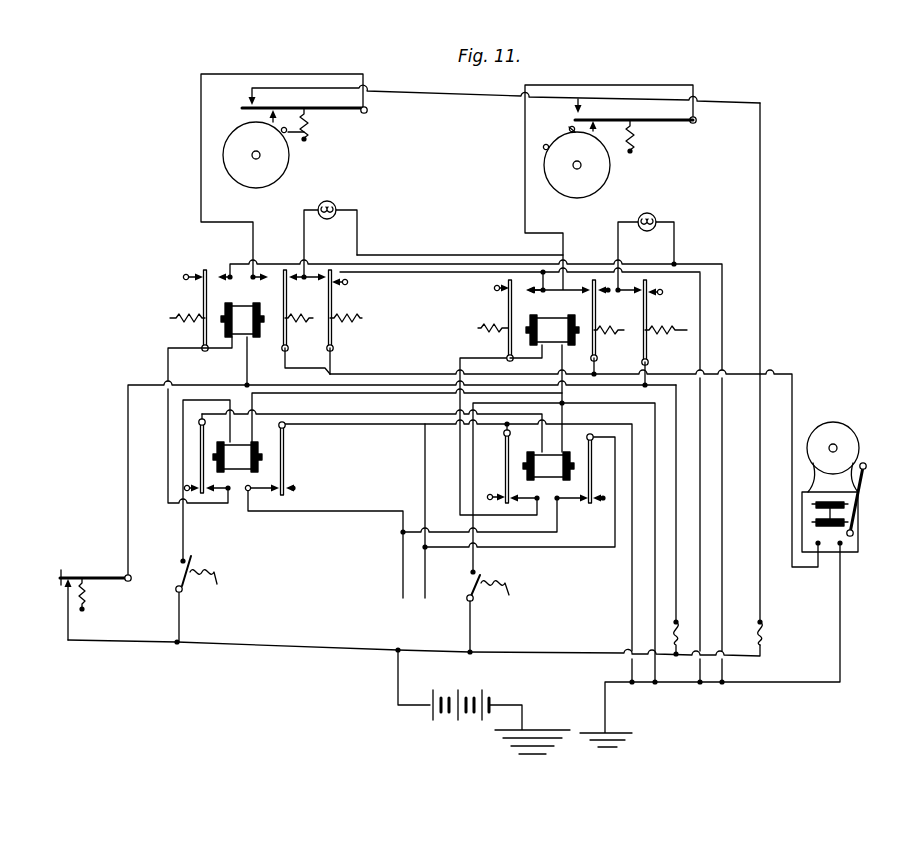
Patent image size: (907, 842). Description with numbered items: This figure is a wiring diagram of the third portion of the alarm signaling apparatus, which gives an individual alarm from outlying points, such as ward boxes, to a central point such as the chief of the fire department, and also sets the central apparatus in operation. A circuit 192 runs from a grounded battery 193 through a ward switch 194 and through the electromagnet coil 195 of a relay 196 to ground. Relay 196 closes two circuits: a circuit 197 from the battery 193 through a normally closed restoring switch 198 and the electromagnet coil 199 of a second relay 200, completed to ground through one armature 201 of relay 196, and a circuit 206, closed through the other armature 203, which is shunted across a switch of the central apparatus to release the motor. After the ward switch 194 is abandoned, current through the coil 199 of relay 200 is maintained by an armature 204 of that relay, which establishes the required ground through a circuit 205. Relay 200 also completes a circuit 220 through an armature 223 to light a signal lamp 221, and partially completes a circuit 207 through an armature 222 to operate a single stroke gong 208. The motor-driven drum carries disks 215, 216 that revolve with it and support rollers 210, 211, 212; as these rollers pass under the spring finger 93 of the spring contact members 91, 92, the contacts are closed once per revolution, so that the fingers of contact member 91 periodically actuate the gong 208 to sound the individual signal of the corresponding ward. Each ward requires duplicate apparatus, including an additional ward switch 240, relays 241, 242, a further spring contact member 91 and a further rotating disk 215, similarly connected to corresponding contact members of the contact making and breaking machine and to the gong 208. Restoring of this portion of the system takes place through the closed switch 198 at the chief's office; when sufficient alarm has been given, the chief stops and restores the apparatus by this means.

The spring contact member 91 is at (612, 108).
The spring contact member 92 is at (363, 93).
The finger 93 is at (364, 113).
The circuit 192 is at (398, 400).
The grounded battery 193 is at (467, 697).
The ward switch 194 is at (181, 569).
The electromagnet coil 195 is at (240, 452).
The relay 196 is at (238, 476).
The circuit 197 is at (170, 357).
The restoring switch 198 is at (95, 577).
The electromagnet coil 199 is at (240, 317).
The second relay 200 is at (248, 293).
The armature 201 is at (202, 450).
The armature 203 is at (283, 465).
The armature 204 is at (203, 290).
The circuit 205 is at (408, 271).
The circuit 206 is at (402, 428).
The circuit 207 is at (201, 130).
The single stroke gong 208 is at (827, 515).
The roller 210 is at (307, 134).
The roller 211 is at (543, 145).
The roller 212 is at (570, 127).
The disk 215 is at (593, 175).
The disk 216 is at (279, 158).
The circuit 220 is at (400, 256).
The signal lamp 221 is at (340, 203).
The armature 222 is at (283, 328).
The armature 223 is at (330, 327).
The ward switch 240 is at (487, 576).
The relay 241 is at (547, 467).
The relay 242 is at (552, 327).